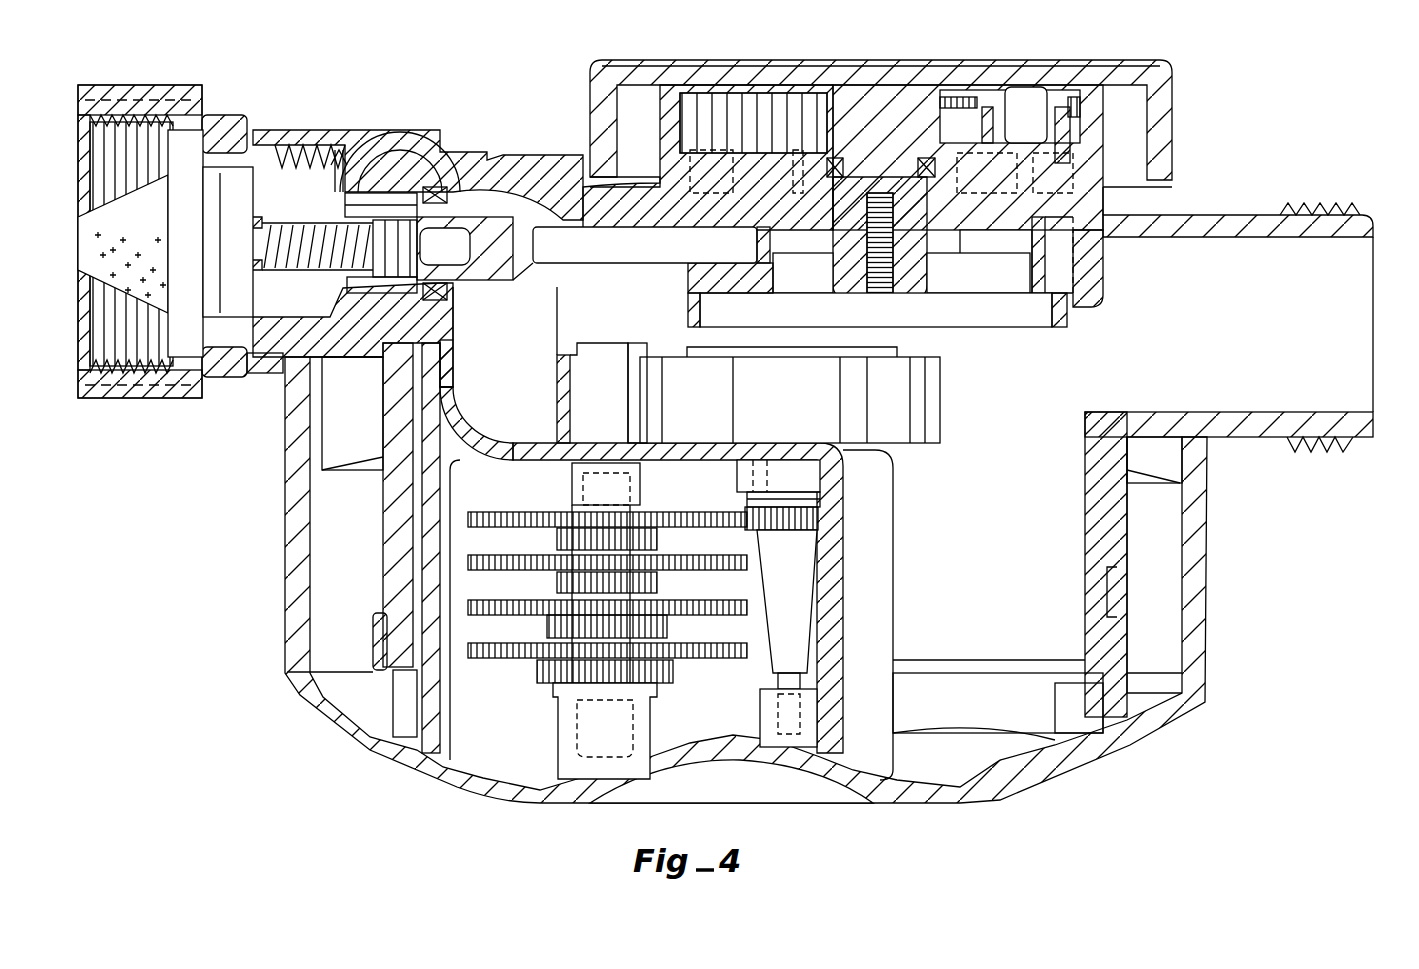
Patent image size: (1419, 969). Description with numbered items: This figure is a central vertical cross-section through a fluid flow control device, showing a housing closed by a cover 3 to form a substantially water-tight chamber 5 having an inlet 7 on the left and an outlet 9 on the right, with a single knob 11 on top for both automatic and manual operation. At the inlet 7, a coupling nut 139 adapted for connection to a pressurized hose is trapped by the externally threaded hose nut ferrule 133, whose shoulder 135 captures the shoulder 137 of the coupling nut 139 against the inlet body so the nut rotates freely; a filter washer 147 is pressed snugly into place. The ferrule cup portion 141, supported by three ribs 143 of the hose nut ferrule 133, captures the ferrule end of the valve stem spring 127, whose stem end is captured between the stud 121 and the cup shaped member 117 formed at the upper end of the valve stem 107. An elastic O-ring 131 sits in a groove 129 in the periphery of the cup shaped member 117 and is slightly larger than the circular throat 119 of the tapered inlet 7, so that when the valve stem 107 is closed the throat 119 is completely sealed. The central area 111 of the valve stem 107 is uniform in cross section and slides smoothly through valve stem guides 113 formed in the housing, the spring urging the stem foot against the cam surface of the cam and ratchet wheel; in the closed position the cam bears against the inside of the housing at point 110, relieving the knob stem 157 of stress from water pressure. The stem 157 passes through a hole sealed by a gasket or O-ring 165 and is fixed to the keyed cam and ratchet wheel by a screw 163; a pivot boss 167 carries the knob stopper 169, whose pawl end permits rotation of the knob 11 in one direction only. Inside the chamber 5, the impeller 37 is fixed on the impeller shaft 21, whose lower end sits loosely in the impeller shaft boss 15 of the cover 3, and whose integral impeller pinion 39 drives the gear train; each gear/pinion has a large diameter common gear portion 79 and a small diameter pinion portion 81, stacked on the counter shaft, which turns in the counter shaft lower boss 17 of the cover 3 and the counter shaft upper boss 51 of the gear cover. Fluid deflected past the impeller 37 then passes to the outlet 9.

The cover 3 is at (397, 763).
The chamber 5 is at (998, 562).
The inlet 7 is at (78, 215).
The outlet 9 is at (1365, 327).
The knob 11 is at (1180, 67).
The impeller shaft boss 15 is at (760, 707).
The counter shaft lower boss 17 is at (560, 727).
The impeller shaft 21 is at (777, 653).
The impeller 37 is at (940, 428).
The impeller pinion 39 is at (760, 523).
The counter shaft upper boss 51 is at (570, 480).
The large diameter common gear portion 79 is at (483, 600).
The small diameter pinion portion 81 is at (553, 628).
The valve stem 107 is at (640, 262).
The bearing point of cam portion against housing 110 is at (1045, 255).
The central area of the valve stem 111 is at (553, 262).
The valve stem guides 113 is at (677, 217).
The cup shaped member 117 is at (408, 193).
The throat 119 is at (435, 185).
The stud 121 is at (475, 218).
The valve stem spring 127 is at (338, 275).
The groove 129 is at (430, 300).
The O-ring 131 is at (452, 167).
The hose nut ferrule 133 is at (273, 323).
The shoulder of the hose nut ferrule 135 is at (193, 370).
The shoulder of the coupling nut 137 is at (227, 350).
The coupling nut 139 is at (123, 390).
The ferrule cup portion 141 is at (290, 213).
The ribs 143 is at (270, 170).
The filter washer 147 is at (185, 140).
The stem 157 is at (942, 122).
The screw 163 is at (893, 312).
The gasket or O-ring 165 is at (837, 158).
The pivot boss 167 is at (1042, 110).
The knob stopper 169 is at (1077, 112).